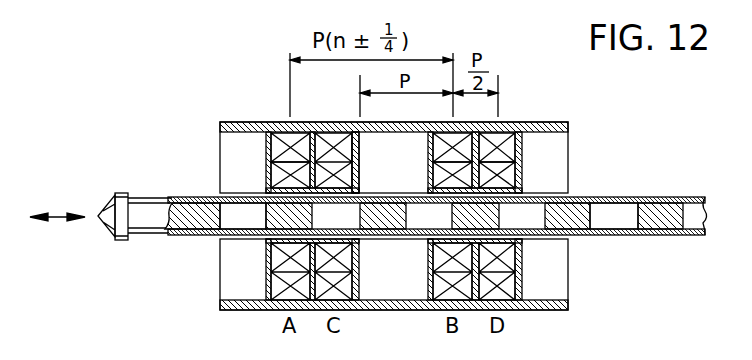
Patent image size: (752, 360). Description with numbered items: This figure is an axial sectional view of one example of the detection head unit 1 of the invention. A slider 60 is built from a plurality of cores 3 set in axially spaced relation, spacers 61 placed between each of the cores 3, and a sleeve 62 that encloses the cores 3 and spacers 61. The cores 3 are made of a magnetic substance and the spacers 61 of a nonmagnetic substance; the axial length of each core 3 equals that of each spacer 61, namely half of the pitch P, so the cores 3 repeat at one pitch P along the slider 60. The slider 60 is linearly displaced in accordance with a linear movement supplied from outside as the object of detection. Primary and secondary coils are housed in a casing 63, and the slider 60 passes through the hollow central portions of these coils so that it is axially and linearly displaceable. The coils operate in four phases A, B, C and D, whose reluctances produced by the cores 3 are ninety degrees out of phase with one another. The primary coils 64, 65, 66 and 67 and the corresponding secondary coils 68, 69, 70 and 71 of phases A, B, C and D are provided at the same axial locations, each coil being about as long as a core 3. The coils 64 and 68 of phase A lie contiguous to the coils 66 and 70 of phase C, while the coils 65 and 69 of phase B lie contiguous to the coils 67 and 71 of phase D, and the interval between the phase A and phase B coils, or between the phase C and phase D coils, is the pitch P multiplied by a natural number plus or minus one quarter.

The linear stepping motor 1 is at (118, 106).
The core 3 is at (185, 232).
The slider 60 is at (165, 194).
The spacer 61 is at (216, 238).
The sleeve 62 is at (607, 197).
The casing 63 is at (530, 121).
The primary coil 64 is at (269, 180).
The primary coil 65 is at (437, 180).
The primary coil 66 is at (353, 162).
The primary coil 67 is at (518, 174).
The secondary coil 68 is at (269, 147).
The secondary coil 69 is at (437, 150).
The secondary coil 70 is at (345, 145).
The secondary coil 71 is at (522, 149).